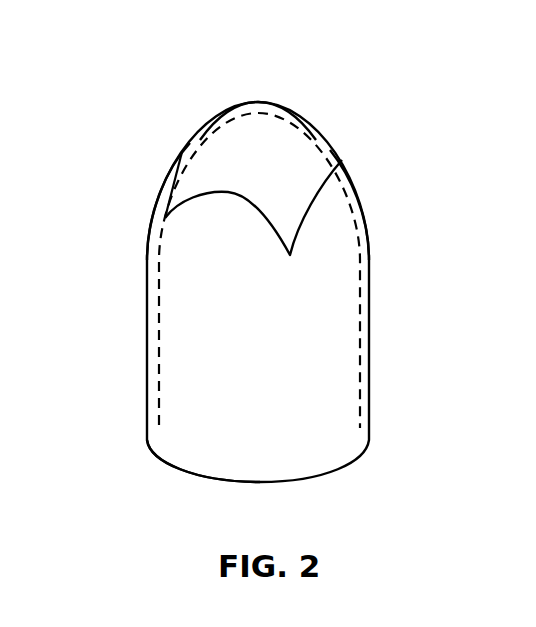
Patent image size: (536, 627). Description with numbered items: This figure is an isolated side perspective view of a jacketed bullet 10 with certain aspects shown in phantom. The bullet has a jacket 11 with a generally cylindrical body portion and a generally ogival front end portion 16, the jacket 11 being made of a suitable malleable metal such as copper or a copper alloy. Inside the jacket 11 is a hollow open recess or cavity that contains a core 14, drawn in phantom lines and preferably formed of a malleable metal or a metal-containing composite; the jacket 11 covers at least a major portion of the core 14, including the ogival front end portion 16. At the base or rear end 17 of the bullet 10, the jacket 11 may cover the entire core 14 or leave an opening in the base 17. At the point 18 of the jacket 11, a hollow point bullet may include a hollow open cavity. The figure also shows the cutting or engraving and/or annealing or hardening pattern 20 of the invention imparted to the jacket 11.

The jacketed bullet 10 is at (313, 362).
The jacket 11 is at (362, 198).
The core 14 is at (313, 400).
The ogival front end portion 16 is at (195, 142).
The base or rear end 17 is at (148, 453).
The point 18 is at (247, 108).
The cutting or engraving and/or annealing or hardening pattern 20 is at (303, 208).